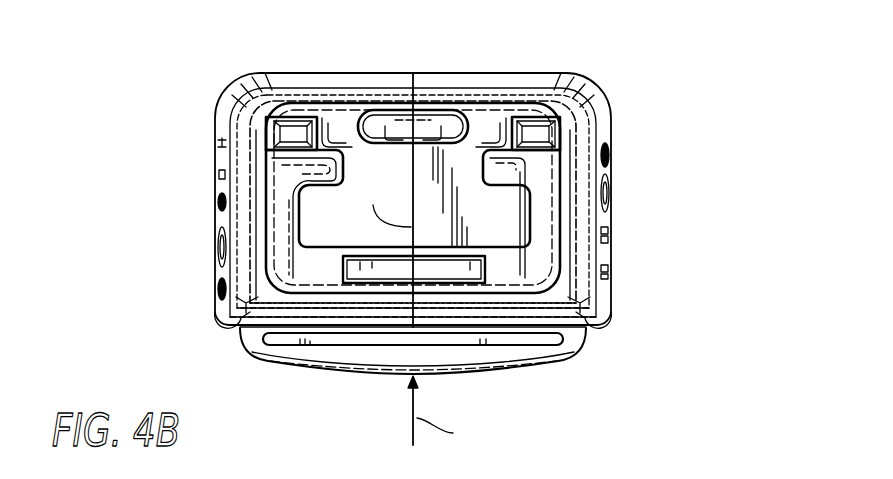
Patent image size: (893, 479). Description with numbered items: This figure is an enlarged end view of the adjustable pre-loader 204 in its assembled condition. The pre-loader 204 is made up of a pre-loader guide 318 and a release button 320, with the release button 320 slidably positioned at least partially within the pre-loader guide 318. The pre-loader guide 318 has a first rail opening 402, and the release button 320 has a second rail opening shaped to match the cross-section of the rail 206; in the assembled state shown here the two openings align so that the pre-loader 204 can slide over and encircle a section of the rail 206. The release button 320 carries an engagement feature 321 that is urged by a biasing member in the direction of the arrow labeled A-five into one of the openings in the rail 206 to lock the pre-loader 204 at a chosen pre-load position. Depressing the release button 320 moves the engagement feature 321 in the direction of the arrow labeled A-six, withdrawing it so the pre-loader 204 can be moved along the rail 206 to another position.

The pre-loader 204 is at (658, 60).
The pre-loader guide 318 is at (247, 86).
The rail 206 is at (559, 159).
The first rail opening 402 is at (549, 226).
The engagement feature 321 is at (373, 282).
The release button 320 is at (538, 360).